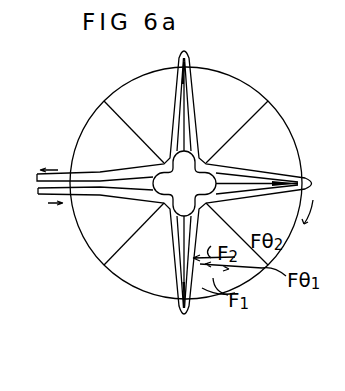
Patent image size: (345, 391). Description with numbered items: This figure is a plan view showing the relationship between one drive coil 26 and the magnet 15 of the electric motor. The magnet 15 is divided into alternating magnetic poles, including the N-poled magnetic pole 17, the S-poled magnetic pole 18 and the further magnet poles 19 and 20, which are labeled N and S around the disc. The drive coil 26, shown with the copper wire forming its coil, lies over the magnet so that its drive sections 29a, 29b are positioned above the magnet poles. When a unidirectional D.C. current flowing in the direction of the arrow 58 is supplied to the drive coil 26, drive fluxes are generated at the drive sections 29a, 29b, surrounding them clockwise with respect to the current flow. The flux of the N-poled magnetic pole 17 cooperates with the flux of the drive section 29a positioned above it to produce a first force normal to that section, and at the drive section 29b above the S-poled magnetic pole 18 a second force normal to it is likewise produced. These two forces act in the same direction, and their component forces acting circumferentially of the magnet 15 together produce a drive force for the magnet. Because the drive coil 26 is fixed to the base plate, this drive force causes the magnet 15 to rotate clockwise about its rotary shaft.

The magnet 15 is at (288, 128).
The magnet pole 17 is at (250, 281).
The magnet pole 18 is at (137, 287).
The magnet pole 19 is at (86, 243).
The magnet pole 20 is at (282, 232).
The drive coil 26 is at (190, 52).
The drive section 29a is at (191, 292).
The drive section 29b is at (176, 288).
The arrow 58 is at (45, 205).